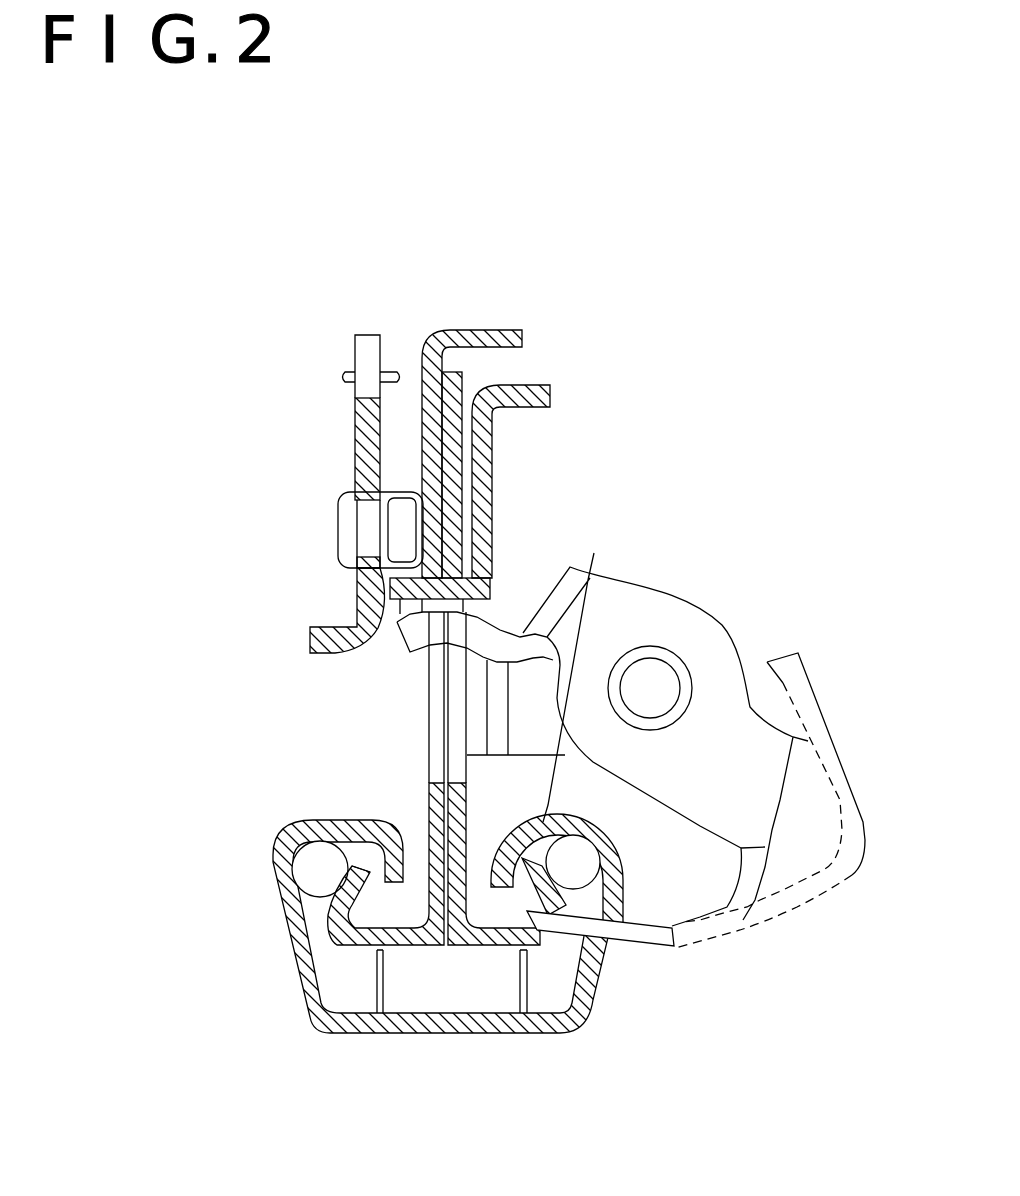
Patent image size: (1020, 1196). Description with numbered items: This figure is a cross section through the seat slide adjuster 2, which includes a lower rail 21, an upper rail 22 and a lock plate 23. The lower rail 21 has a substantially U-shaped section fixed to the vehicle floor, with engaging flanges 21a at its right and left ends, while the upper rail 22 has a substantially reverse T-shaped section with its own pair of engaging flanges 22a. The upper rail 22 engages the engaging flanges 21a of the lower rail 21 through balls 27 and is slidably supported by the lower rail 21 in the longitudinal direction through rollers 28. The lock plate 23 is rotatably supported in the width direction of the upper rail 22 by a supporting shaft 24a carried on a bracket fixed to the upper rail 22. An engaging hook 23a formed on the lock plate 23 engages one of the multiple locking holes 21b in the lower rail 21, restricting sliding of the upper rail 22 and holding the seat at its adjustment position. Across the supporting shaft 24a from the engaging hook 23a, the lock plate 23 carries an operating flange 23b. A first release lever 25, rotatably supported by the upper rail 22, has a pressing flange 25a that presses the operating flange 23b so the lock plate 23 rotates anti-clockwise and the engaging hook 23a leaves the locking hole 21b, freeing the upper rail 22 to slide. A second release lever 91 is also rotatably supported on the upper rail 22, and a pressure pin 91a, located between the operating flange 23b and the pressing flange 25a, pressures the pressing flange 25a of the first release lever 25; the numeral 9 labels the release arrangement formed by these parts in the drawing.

The seat slide adjuster 2 is at (272, 588).
The striker pin 9 is at (322, 330).
The second release lever 91 is at (362, 420).
The pressure pin 91a is at (391, 502).
The lower rail 21 is at (505, 1043).
The engaging flanges 21a is at (618, 598).
The locking holes 21b is at (605, 940).
The upper rail 22 is at (412, 782).
The engaging flanges 22a is at (345, 876).
The lock plate 23 is at (694, 594).
The engaging hook 23a is at (563, 935).
The operating flange 23b is at (327, 662).
The supporting shaft 24a is at (658, 675).
The first release lever 25 is at (498, 442).
The pressing flange 25a is at (357, 558).
The balls 27 is at (313, 860).
The rollers 28 is at (423, 1000).